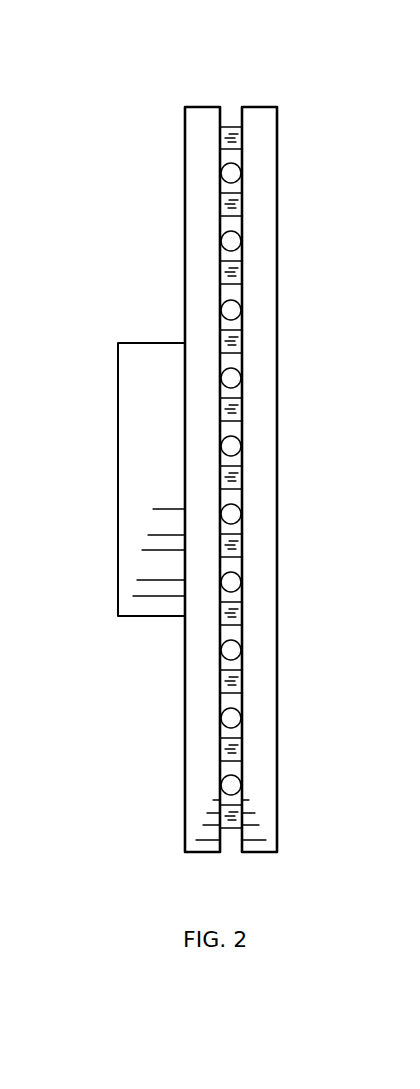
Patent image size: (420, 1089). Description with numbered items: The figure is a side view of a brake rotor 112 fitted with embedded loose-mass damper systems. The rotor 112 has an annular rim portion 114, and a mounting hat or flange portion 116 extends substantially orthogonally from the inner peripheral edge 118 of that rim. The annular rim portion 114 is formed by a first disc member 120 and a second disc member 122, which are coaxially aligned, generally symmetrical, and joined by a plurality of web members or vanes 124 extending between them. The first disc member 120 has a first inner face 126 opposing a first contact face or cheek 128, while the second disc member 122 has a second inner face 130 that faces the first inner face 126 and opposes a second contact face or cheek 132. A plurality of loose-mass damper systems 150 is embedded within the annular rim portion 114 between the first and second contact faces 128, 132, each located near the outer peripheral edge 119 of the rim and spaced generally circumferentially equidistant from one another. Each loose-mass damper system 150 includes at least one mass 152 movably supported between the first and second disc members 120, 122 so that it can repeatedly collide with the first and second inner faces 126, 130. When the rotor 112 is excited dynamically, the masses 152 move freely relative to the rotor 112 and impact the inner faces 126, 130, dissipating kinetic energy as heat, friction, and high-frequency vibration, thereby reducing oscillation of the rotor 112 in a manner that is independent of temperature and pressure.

The rotor 112 is at (92, 135).
The annular rim portion 114 is at (230, 82).
The mounting hat or flange portion 116 is at (124, 343).
The inner peripheral edge 118 is at (182, 343).
The outer peripheral edge 119 is at (203, 852).
The first disc member 120 is at (185, 131).
The second disc member 122 is at (277, 131).
The web members or vanes 124 is at (238, 818).
The first inner face 126 is at (233, 193).
The first contact face or cheek 128 is at (177, 182).
The second inner face 130 is at (227, 258).
The second contact face or cheek 132 is at (287, 258).
The loose-mass damper system 150 is at (262, 176).
The mass 152 is at (228, 172).